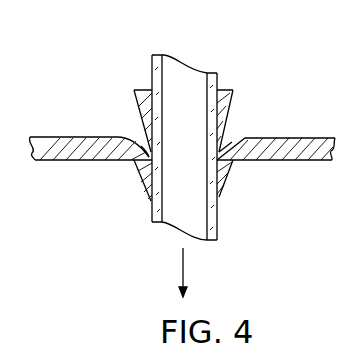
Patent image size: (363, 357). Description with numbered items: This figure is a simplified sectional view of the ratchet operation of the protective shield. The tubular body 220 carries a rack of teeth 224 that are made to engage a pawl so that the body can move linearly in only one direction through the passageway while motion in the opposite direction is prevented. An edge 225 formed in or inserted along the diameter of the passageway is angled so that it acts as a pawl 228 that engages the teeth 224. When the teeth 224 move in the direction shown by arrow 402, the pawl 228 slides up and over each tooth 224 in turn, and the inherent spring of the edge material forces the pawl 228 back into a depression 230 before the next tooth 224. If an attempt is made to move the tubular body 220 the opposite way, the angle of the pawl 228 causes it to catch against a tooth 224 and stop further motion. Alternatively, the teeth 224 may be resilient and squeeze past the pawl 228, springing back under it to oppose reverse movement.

The tubular body 220 is at (186, 78).
The teeth 224 is at (141, 177).
The edge 225 is at (220, 152).
The pawl 228 is at (60, 147).
The depression 230 is at (135, 133).
The arrow 402 is at (186, 272).